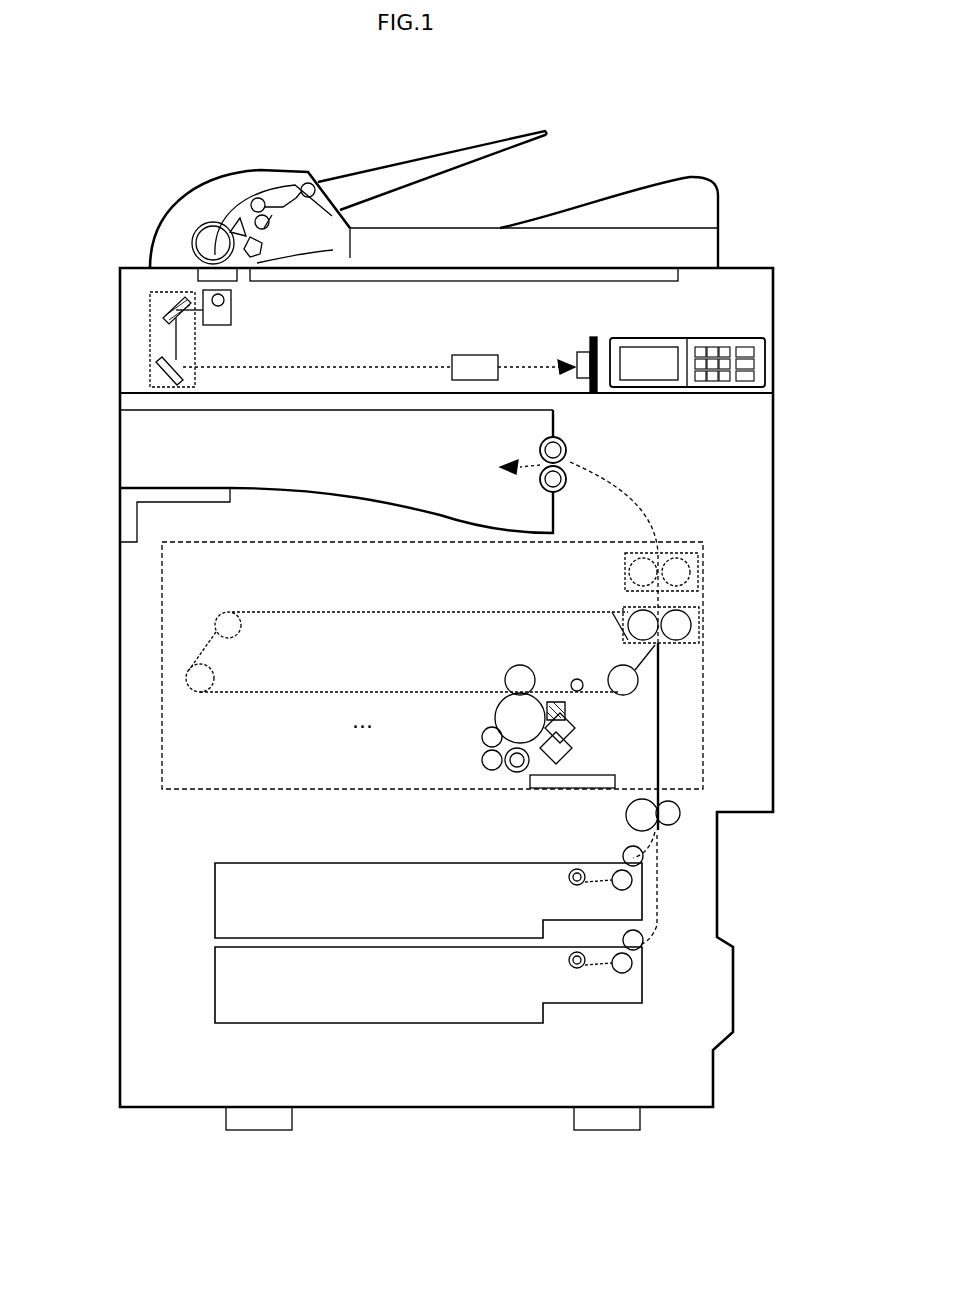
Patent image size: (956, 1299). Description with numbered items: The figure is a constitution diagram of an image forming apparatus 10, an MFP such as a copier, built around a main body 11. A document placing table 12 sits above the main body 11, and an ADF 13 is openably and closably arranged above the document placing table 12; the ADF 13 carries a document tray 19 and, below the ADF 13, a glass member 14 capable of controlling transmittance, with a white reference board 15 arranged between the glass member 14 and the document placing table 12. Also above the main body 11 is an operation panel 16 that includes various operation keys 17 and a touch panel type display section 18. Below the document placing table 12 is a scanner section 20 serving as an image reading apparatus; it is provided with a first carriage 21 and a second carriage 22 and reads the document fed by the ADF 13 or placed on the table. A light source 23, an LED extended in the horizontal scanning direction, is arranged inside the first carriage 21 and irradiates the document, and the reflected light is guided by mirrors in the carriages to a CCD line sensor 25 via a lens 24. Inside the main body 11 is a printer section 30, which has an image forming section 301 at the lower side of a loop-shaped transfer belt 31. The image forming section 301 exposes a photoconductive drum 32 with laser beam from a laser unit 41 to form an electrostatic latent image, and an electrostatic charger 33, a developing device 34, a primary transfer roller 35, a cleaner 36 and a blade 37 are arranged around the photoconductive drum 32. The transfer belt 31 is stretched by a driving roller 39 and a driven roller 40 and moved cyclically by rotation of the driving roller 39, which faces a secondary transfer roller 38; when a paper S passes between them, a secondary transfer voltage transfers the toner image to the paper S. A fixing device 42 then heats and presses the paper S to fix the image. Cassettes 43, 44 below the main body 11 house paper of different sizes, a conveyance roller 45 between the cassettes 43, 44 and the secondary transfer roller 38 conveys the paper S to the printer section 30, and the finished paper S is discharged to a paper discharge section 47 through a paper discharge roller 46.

The image forming apparatus 10 is at (748, 222).
The main body 11 is at (119, 815).
The document placing table 12 is at (482, 272).
The ADF (automatic document feeder) 13 is at (183, 195).
The glass member 14 is at (236, 283).
The white reference board 15 is at (295, 283).
The operation panel 16 is at (773, 368).
The operation keys 17 is at (705, 345).
The display section 18 is at (633, 360).
The document tray 19 is at (418, 166).
The scanner section 20 is at (119, 308).
The first carriage 21 is at (222, 325).
The second carriage 22 is at (150, 357).
The light source 23 is at (233, 310).
The lens 24 is at (462, 355).
The CCD line sensor 25 is at (572, 352).
The printer section 30 is at (708, 664).
The image forming section 301 is at (472, 765).
The transfer belt 31 is at (452, 690).
The photoconductive drum 32 is at (494, 712).
The electrostatic charger 33 is at (568, 750).
The developing device 34 is at (482, 760).
The primary transfer roller 35 is at (520, 665).
The cleaner 36 is at (556, 700).
The blade 37 is at (568, 720).
The secondary transfer roller 38 is at (700, 622).
The driving roller 39 is at (625, 615).
The driven roller 40 is at (214, 678).
The laser unit 41 is at (560, 790).
The fixing device 42 is at (698, 570).
The cassette 43 is at (214, 905).
The cassette 44 is at (214, 985).
The conveyance roller 45 is at (626, 818).
The paper discharge roller 46 is at (573, 458).
The paper discharge section 47 is at (340, 490).
The paper S is at (662, 692).